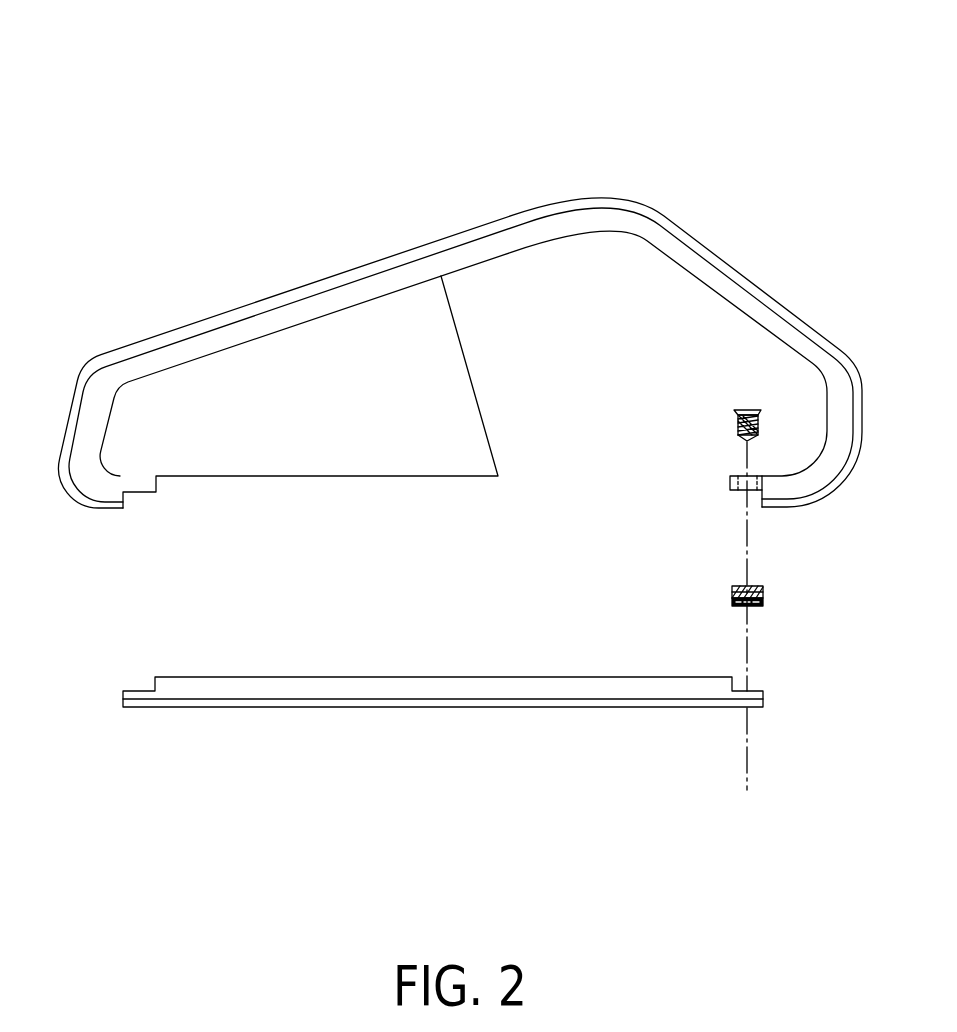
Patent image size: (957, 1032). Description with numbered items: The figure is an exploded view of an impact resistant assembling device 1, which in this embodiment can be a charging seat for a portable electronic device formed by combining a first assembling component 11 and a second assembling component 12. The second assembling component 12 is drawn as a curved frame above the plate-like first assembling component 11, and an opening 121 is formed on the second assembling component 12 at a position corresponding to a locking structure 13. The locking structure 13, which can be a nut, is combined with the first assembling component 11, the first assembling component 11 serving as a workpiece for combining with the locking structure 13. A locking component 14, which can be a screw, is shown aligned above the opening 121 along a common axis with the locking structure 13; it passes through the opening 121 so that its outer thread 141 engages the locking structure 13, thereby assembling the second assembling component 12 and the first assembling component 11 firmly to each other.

The impact resistant assembling device 1 is at (721, 92).
The first assembling component 11 is at (512, 693).
The second assembling component 12 is at (460, 353).
The opening 121 is at (741, 472).
The locking structure 13 is at (764, 596).
The locking component 14 is at (743, 406).
The outer thread 141 is at (759, 423).